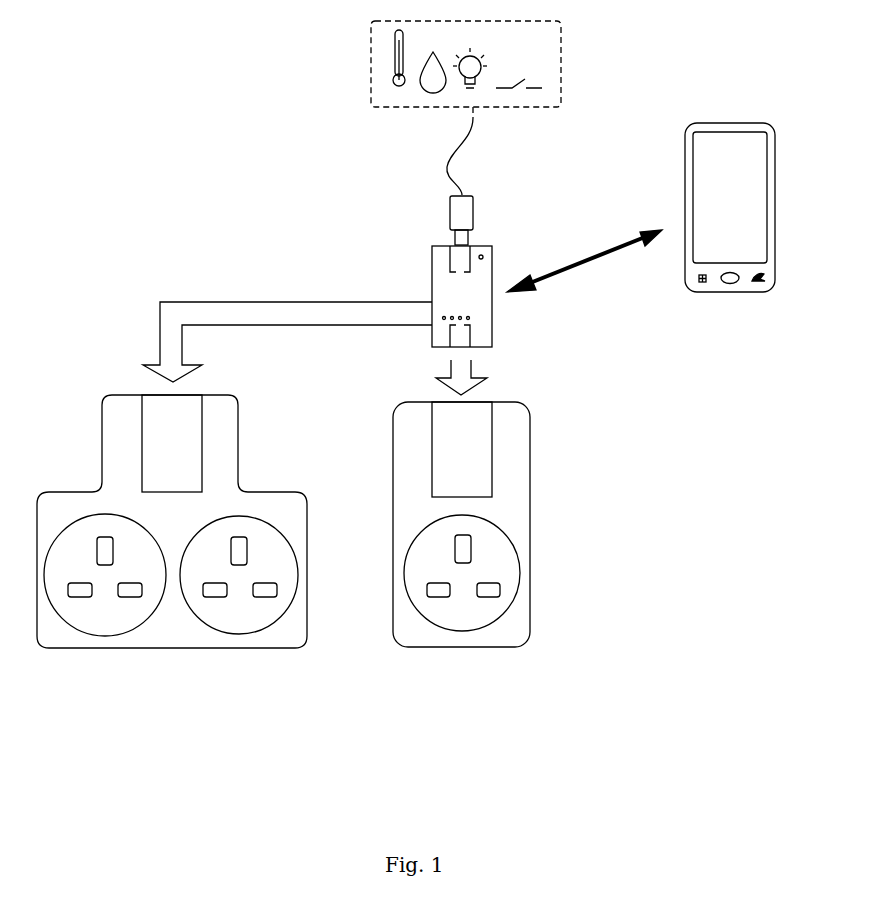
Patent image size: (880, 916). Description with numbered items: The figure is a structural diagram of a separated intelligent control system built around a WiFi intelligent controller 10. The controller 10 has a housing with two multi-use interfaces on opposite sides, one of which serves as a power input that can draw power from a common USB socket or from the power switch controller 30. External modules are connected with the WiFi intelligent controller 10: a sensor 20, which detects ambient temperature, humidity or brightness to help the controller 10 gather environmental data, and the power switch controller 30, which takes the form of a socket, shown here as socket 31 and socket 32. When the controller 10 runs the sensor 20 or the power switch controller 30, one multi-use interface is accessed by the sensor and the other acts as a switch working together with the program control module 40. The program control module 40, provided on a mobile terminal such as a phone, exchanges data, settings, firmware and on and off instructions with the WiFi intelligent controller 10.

The WiFi intelligent controller 10 is at (485, 330).
The sensor 20 is at (560, 62).
The power switch controller 30 is at (341, 582).
The socket 31 is at (300, 584).
The socket 32 is at (380, 705).
The program control module 40 is at (730, 292).